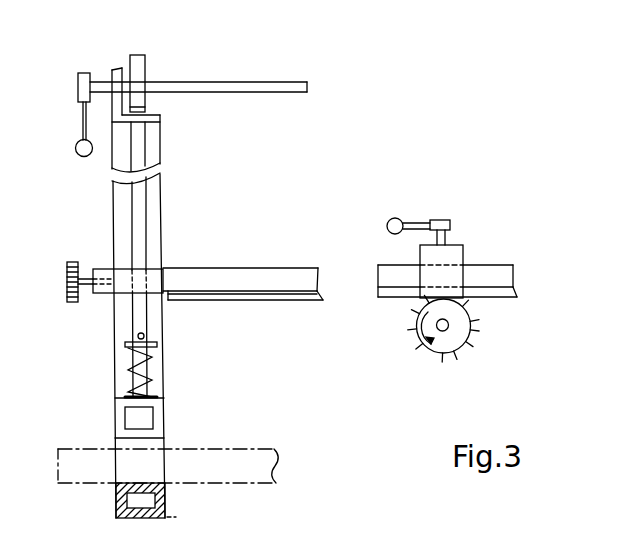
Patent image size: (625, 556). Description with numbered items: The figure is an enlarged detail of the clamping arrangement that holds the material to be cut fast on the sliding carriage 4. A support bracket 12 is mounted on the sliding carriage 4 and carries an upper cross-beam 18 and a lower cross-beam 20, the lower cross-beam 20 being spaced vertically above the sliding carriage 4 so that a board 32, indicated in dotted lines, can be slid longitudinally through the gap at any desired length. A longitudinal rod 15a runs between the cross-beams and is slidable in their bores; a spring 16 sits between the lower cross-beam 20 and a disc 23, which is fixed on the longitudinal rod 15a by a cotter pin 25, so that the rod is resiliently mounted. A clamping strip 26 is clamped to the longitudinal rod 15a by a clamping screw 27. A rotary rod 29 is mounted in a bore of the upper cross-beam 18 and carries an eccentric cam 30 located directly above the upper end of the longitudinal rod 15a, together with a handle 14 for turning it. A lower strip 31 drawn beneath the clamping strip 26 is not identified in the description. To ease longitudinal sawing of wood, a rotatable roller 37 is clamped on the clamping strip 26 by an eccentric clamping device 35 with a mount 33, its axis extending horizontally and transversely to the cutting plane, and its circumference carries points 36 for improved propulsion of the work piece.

The sliding carriage 4 is at (58, 483).
The support bracket 12 is at (112, 202).
The handle 14 is at (75, 123).
The longitudinal rod 15a is at (147, 210).
The spring 16 is at (157, 383).
The upper cross-beam 18 is at (112, 70).
The lower cross-beam 20 is at (158, 417).
The disc 23 is at (125, 343).
The cotter pin 25 is at (145, 337).
The clamping strip 26 is at (212, 267).
The clamping screw 27 is at (66, 286).
The rotary rod 29 is at (243, 80).
The eccentric cam 30 is at (142, 68).
The guide strip 31 is at (292, 301).
The board 32 is at (248, 463).
The holder block 33 is at (463, 255).
The eccentric clamping device 35 is at (438, 218).
The points 36 is at (427, 352).
The rotatable roller 37 is at (457, 332).